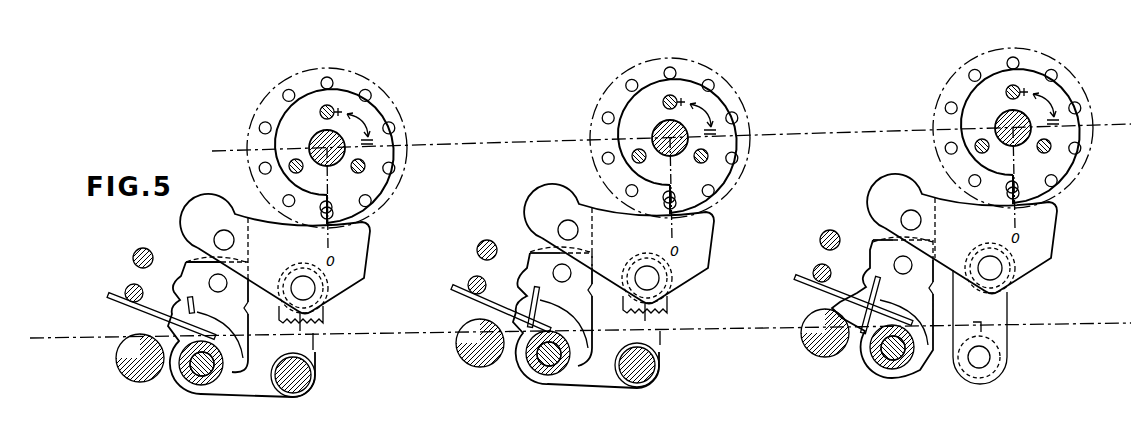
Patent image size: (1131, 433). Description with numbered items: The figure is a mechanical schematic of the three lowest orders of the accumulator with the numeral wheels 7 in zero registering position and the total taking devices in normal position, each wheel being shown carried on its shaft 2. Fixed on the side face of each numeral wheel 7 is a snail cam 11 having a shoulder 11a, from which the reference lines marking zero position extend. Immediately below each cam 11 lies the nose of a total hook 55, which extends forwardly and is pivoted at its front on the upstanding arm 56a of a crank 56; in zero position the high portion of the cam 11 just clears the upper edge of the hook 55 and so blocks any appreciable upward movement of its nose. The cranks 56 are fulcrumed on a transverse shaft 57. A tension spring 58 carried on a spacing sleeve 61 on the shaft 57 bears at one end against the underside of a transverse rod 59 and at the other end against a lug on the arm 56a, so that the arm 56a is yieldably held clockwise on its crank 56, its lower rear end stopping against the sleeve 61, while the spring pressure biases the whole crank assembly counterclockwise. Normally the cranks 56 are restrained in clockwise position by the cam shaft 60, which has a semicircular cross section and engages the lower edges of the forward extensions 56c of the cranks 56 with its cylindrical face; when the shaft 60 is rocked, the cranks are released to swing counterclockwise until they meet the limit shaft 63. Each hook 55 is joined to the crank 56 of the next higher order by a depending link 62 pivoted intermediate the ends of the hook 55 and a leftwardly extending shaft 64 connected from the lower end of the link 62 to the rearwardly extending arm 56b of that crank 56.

The shaft 2 is at (314, 140).
The numeral wheel 7 is at (398, 103).
The snail cam 11 is at (385, 178).
The shoulder 11a is at (333, 206).
The total hook 55 is at (700, 252).
The crank 56 is at (260, 391).
The upstanding arm 56a is at (226, 307).
The rearwardly extending arm 56b is at (313, 350).
The forward extension 56c is at (150, 328).
The transverse shaft 57 is at (200, 390).
The tension spring 58 is at (113, 301).
The rod 59 is at (132, 284).
The cam shaft 60 is at (135, 357).
The spacing sleeve 61 is at (190, 370).
The depending link 62 is at (328, 313).
The limit shaft 63 is at (155, 224).
The shaft 64 is at (315, 378).